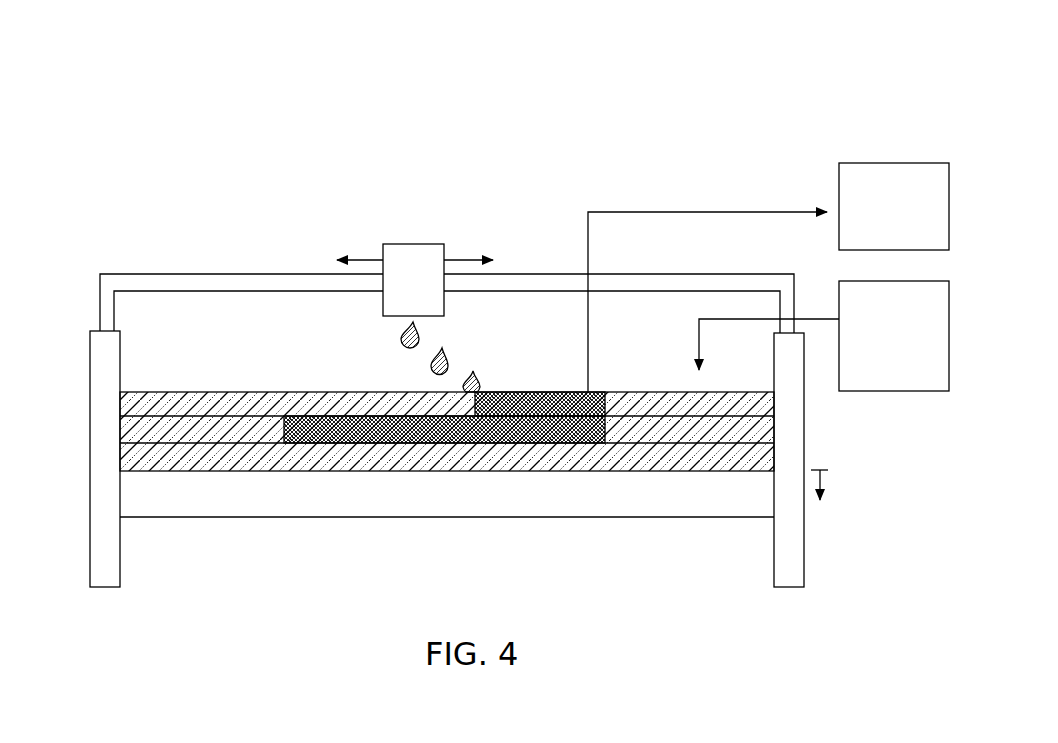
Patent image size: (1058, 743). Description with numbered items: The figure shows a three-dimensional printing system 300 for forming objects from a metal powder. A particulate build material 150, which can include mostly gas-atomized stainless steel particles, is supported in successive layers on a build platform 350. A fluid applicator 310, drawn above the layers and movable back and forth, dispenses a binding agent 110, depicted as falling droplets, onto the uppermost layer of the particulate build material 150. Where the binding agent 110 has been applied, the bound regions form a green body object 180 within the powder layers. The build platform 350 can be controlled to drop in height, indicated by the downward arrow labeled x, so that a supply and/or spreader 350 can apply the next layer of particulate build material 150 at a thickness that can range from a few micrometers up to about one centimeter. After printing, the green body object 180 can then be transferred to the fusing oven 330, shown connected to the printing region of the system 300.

The three-dimensional printing system 300 is at (178, 103).
The fluid applicator 310 is at (431, 292).
The fusing oven 330 is at (911, 217).
The build platform 350 is at (911, 345).
The particulate build material 150 is at (186, 425).
The binding agent 110 is at (404, 338).
The green body object 180 is at (408, 443).